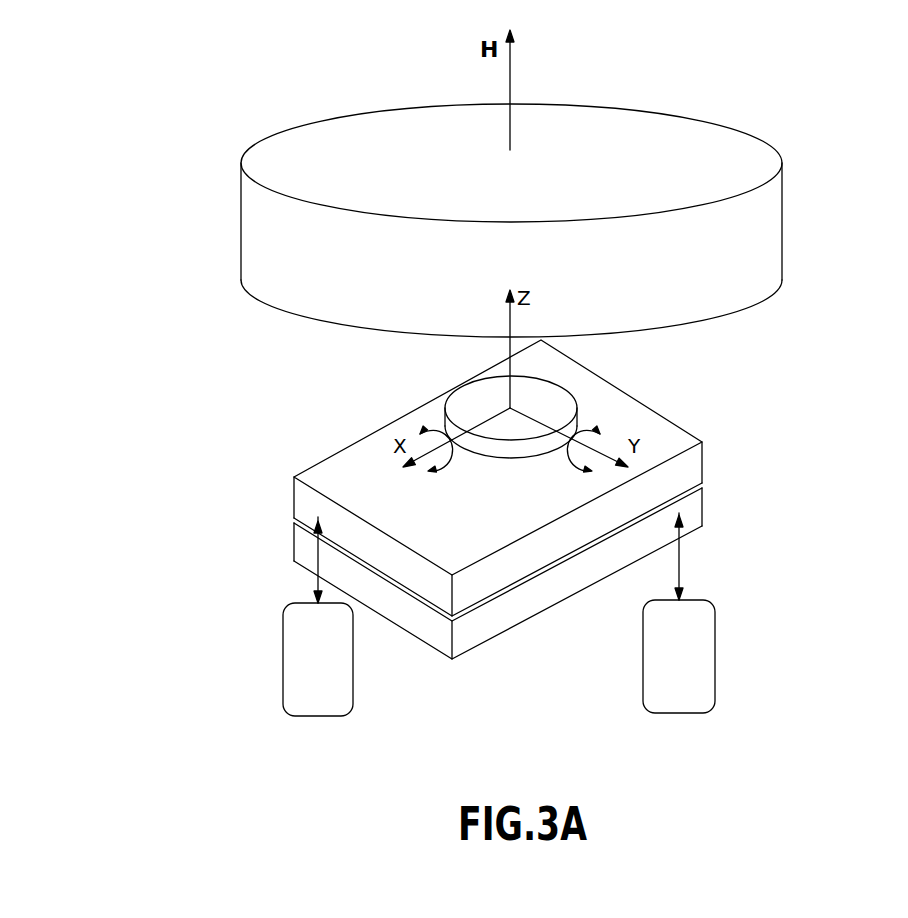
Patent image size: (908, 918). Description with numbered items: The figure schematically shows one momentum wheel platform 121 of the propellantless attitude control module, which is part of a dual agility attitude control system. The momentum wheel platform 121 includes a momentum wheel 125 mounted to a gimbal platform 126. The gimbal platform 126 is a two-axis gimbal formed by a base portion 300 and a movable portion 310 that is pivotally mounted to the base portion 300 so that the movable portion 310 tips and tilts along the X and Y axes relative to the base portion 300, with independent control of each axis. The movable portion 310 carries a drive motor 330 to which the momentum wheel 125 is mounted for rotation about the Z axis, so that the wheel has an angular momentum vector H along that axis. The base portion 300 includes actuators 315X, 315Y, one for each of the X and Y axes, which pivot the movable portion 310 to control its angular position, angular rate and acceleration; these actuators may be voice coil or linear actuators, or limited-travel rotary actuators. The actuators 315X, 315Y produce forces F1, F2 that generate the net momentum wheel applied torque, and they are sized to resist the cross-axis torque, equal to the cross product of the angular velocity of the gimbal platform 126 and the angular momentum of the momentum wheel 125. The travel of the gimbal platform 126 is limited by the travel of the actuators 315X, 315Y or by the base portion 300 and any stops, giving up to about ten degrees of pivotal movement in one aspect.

The momentum wheel platform 121 is at (200, 92).
The momentum wheel 125 is at (783, 218).
The gimbal platform 126 is at (758, 469).
The base portion 300 is at (520, 624).
The movable portion 310 is at (312, 463).
The X axis actuator 315X is at (283, 678).
The Y axis actuator 315Y is at (715, 686).
The drive motor 330 is at (465, 410).
The actuator force F1 is at (680, 557).
The actuator force F2 is at (317, 557).